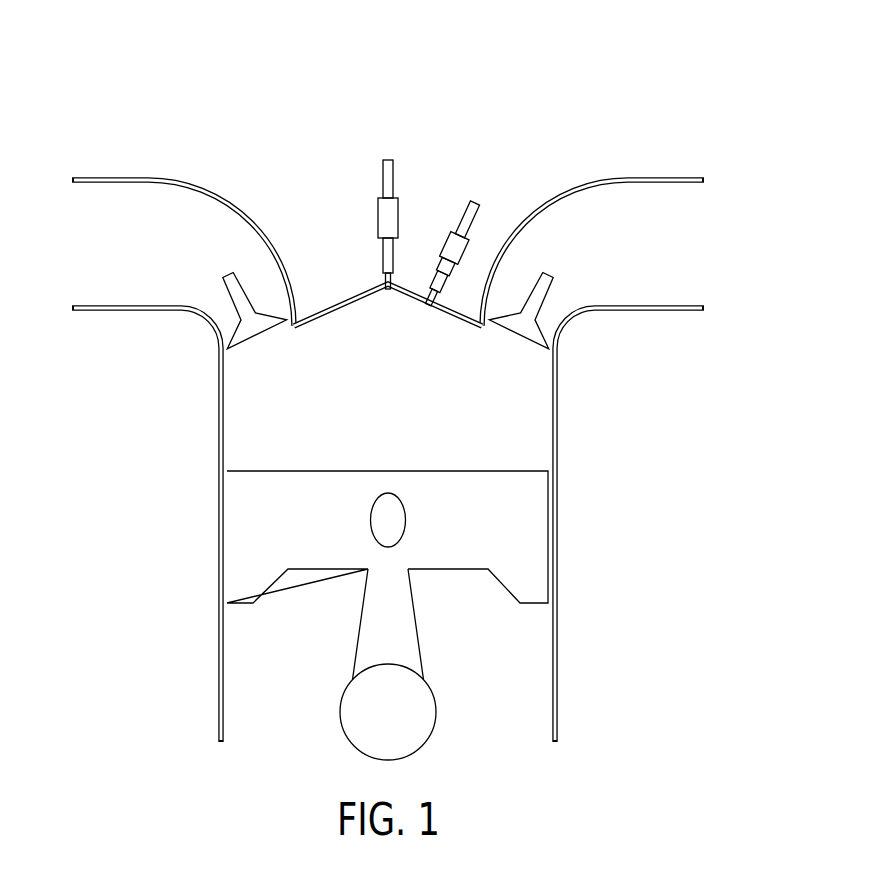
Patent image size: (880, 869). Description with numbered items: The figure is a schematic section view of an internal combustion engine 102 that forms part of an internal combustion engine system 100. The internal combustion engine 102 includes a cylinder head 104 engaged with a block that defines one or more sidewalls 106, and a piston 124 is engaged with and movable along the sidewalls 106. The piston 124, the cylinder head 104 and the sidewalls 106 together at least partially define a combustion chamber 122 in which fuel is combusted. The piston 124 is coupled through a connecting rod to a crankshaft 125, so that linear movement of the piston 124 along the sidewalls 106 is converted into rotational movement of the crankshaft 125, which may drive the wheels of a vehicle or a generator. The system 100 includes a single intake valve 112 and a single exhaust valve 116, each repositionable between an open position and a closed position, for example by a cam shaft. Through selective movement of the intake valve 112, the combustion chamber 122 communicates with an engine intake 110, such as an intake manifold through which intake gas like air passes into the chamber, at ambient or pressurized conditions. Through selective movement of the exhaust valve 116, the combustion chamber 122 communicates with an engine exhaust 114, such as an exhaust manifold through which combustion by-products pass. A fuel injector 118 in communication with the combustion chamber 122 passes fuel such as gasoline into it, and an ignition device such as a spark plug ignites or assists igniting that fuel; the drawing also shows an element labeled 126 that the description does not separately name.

The internal combustion engine system 100 is at (384, 384).
The internal combustion engine 102 is at (468, 545).
The cylinder head 104 is at (387, 284).
The sidewalls 106 is at (559, 440).
The engine intake 110 is at (93, 257).
The intake valve 112 is at (232, 276).
The engine exhaust 114 is at (715, 259).
The exhaust valve 116 is at (544, 276).
The fuel injector 118 is at (382, 180).
The combustion chamber 122 is at (408, 413).
The piston 124 is at (290, 485).
The crankshaft 125 is at (348, 713).
The fuel injector 126 is at (453, 242).